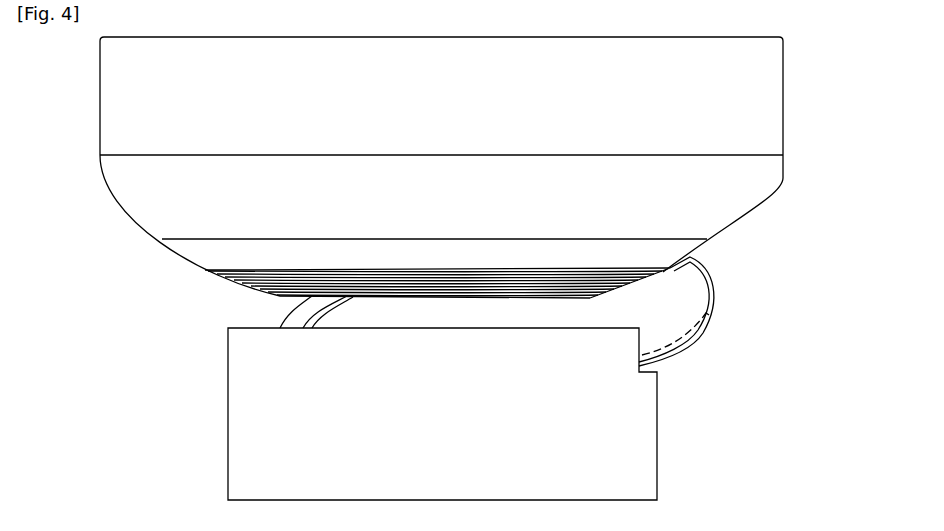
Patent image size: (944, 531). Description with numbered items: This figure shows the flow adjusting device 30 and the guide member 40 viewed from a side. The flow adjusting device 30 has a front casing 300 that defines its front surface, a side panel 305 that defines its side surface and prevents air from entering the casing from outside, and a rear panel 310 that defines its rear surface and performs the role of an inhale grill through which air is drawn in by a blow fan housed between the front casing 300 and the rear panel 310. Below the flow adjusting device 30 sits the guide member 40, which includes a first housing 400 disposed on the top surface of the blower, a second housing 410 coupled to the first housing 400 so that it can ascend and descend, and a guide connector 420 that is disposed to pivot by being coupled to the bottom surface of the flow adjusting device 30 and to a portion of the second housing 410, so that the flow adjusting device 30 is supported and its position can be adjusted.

The flow adjusting device 30 is at (451, 167).
The front casing 300 is at (763, 120).
The side panel 305 is at (763, 178).
The rear panel 310 is at (700, 245).
The guide member 40 is at (451, 378).
The first housing 400 is at (637, 412).
The second housing 410 is at (673, 300).
The guide connector 420 is at (707, 337).